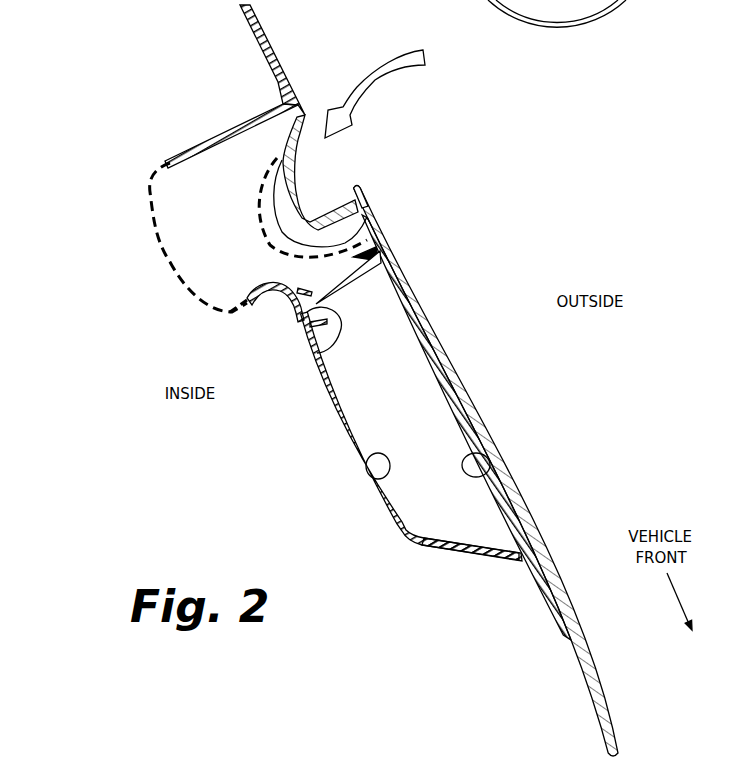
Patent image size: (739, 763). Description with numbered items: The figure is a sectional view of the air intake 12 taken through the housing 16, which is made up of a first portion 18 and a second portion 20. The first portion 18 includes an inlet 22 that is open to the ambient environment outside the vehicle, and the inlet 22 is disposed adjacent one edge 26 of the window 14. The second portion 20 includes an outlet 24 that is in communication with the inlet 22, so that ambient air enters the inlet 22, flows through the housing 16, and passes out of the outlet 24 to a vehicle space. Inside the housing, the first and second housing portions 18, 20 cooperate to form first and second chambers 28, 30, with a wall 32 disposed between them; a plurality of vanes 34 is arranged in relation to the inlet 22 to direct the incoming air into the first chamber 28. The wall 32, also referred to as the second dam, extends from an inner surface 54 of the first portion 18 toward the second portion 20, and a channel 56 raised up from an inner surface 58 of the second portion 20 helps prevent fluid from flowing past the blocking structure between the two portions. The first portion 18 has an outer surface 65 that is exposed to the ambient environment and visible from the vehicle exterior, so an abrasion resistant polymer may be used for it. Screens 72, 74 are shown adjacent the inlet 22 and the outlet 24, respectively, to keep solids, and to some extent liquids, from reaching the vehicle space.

The air intake 12 is at (115, 155).
The window 14 is at (599, 683).
The housing 16 is at (453, 557).
The first portion 18 is at (270, 38).
The second portion 20 is at (222, 137).
The inlet 22 is at (340, 200).
The outlet 24 is at (170, 163).
The edge 26 is at (353, 185).
The first chamber 28 is at (368, 245).
The second chamber 30 is at (425, 367).
The wall 32 is at (345, 280).
The vanes 34 is at (278, 228).
The inner surface 54 is at (490, 455).
The channel 56 is at (317, 352).
The inner surface 58 is at (385, 484).
The outer surface 65 is at (282, 84).
The screen 72 is at (270, 163).
The screen 74 is at (170, 266).